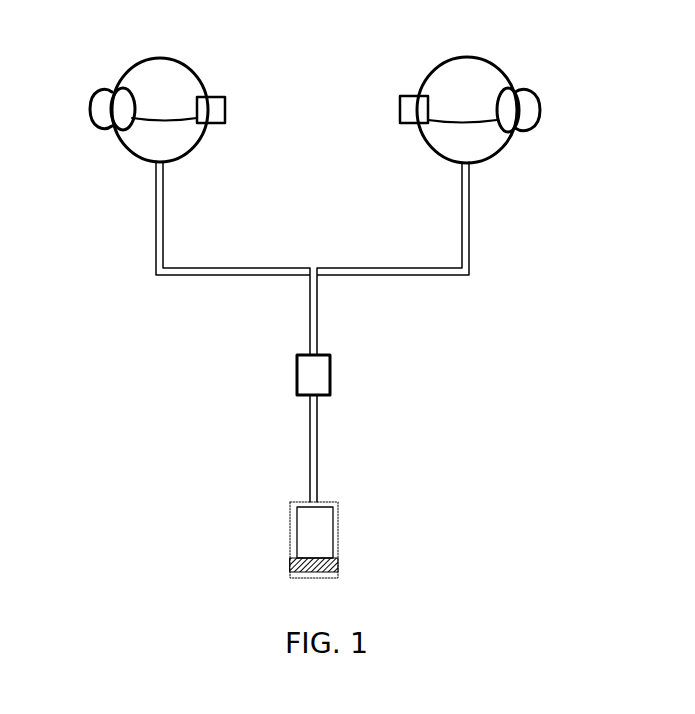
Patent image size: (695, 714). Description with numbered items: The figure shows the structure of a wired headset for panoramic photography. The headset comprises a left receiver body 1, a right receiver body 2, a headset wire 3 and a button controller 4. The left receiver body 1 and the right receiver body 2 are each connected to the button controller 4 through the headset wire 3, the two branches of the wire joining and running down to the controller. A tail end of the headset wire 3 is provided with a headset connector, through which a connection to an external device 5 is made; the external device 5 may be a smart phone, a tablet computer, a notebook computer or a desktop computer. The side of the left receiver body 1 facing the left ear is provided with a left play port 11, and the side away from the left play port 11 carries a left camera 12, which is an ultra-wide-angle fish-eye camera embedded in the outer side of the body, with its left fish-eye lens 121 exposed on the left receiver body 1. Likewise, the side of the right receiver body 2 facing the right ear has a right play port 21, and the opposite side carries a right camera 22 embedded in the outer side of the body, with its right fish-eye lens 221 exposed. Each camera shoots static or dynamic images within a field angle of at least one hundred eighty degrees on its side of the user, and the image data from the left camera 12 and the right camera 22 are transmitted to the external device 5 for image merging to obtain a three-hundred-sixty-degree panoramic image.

The left receiver body 1 is at (141, 77).
The left play port 11 is at (214, 112).
The left camera 12 is at (111, 92).
The left fish-eye lens 121 is at (93, 114).
The right receiver body 2 is at (447, 80).
The right play port 21 is at (402, 100).
The right camera 22 is at (502, 97).
The right fish-eye lens 221 is at (532, 112).
The headset wire 3 is at (155, 225).
The button controller 4 is at (297, 368).
The external device 5 is at (299, 525).